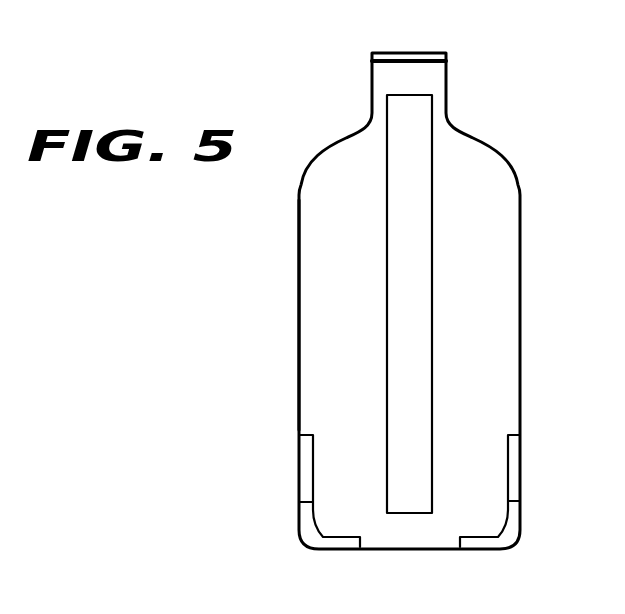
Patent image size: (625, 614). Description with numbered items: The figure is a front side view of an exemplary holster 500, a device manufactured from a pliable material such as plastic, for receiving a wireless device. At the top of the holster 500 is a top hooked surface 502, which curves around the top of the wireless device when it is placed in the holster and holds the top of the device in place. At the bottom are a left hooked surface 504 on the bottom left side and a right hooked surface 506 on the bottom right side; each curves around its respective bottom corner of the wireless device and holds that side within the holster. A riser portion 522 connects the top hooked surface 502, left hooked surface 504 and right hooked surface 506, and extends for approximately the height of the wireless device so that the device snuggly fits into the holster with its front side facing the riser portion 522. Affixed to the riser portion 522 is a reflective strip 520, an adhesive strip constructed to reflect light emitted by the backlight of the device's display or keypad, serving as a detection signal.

The holster 500 is at (521, 361).
The top hooked surface 502 is at (406, 53).
The left hooked surface 504 is at (305, 534).
The right hooked surface 506 is at (522, 533).
The reflective strip 520 is at (418, 167).
The riser portion 522 is at (299, 272).